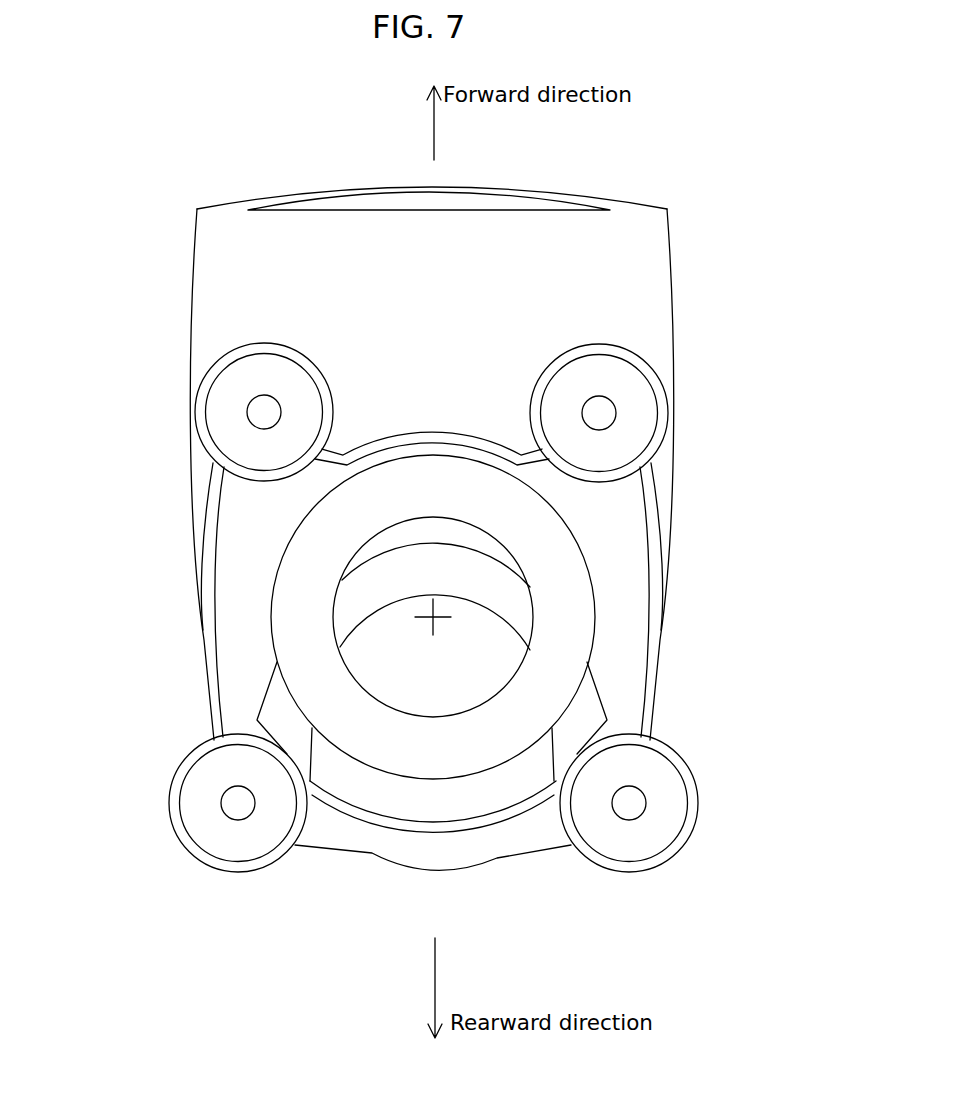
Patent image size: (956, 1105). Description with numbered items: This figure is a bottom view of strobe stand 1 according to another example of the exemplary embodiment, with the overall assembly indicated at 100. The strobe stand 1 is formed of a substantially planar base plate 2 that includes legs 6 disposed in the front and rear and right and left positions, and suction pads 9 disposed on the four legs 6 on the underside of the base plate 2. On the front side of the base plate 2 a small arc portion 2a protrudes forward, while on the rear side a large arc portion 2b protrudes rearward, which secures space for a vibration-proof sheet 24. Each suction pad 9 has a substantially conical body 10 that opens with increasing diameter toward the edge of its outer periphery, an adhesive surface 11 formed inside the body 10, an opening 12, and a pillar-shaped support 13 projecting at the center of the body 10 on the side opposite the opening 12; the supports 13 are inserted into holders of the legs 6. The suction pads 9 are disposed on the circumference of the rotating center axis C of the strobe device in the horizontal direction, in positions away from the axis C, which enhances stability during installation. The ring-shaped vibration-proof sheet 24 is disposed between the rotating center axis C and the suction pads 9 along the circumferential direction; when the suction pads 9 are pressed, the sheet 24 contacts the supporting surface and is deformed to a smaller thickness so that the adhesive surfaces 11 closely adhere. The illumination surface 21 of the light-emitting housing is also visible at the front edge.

The electric power steering device 100 is at (172, 103).
The strobe stand 1 is at (687, 652).
The base plate 2 is at (172, 543).
The small arc portion 2a is at (427, 437).
The large arc portion 2b is at (473, 822).
The illumination surface 21 is at (508, 203).
The vibration-proof sheet 24 is at (413, 747).
The legs 6 is at (210, 598).
The suction pads 9 is at (196, 412).
The body 10 is at (258, 345).
The adhesive surface 11 is at (232, 387).
The opening 12 is at (308, 367).
The support 13 is at (263, 418).
The rotating center axis C is at (433, 620).